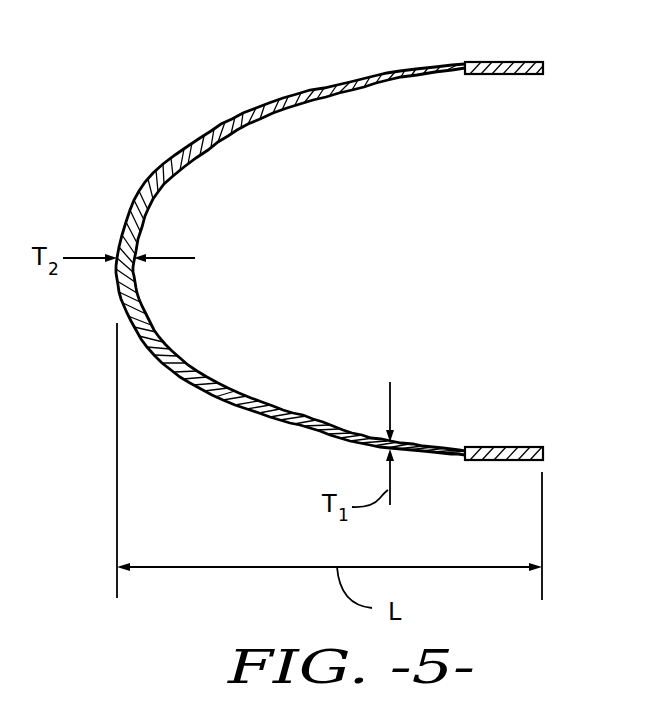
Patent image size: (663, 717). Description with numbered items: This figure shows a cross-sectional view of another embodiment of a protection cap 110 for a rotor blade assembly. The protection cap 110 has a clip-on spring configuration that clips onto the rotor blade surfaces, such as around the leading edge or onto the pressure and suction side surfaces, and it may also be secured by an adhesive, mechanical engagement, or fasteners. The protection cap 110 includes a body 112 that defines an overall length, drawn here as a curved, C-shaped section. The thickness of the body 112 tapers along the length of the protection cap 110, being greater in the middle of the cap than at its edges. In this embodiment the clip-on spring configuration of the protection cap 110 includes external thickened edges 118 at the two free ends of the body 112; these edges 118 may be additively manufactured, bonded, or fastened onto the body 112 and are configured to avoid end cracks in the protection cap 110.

The protection cap 110 is at (93, 158).
The body 112 is at (273, 105).
The external thickened edges 118 is at (517, 62).